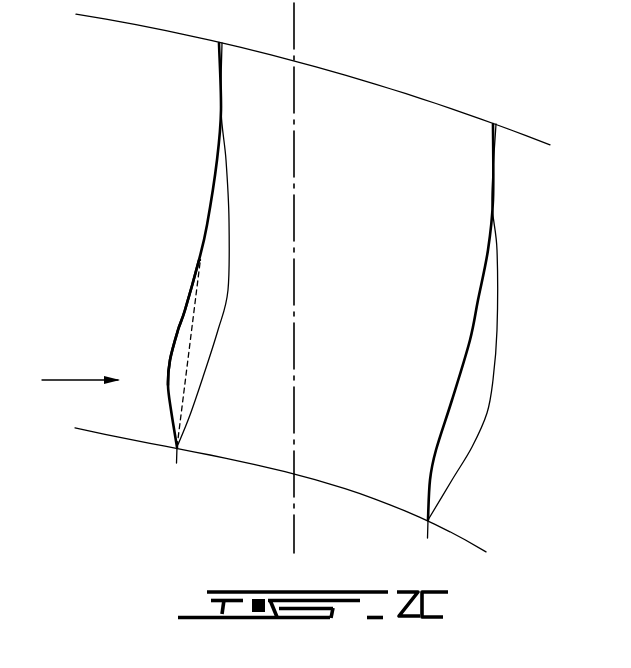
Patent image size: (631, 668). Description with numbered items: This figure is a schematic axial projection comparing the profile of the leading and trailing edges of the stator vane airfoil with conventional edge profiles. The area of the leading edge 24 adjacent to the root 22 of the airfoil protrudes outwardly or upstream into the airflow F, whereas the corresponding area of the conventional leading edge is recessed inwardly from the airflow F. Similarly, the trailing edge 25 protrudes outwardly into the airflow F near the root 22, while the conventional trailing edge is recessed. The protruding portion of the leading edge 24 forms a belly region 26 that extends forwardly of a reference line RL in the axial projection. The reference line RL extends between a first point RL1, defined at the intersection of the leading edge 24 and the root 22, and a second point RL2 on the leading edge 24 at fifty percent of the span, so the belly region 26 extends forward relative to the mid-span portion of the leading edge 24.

The root 22 is at (280, 496).
The leading edge 24 is at (160, 245).
The trailing edge 25 is at (438, 322).
The belly region 26 is at (152, 358).
The airflow F is at (81, 368).
The reference line RL is at (193, 353).
The first point RL1 is at (177, 449).
The second point RL2 is at (200, 258).